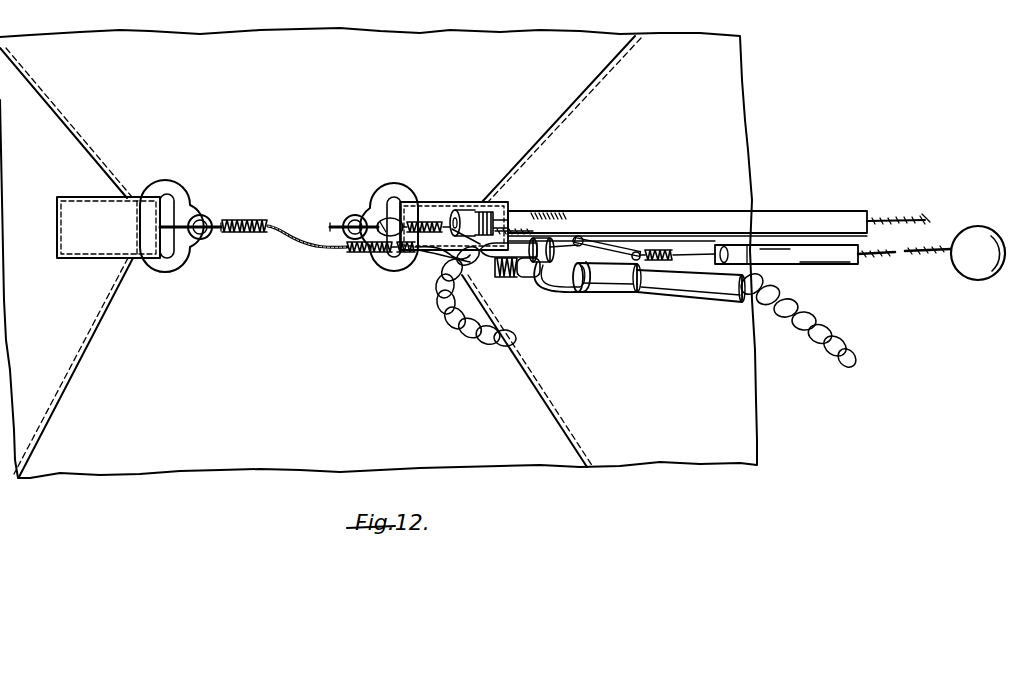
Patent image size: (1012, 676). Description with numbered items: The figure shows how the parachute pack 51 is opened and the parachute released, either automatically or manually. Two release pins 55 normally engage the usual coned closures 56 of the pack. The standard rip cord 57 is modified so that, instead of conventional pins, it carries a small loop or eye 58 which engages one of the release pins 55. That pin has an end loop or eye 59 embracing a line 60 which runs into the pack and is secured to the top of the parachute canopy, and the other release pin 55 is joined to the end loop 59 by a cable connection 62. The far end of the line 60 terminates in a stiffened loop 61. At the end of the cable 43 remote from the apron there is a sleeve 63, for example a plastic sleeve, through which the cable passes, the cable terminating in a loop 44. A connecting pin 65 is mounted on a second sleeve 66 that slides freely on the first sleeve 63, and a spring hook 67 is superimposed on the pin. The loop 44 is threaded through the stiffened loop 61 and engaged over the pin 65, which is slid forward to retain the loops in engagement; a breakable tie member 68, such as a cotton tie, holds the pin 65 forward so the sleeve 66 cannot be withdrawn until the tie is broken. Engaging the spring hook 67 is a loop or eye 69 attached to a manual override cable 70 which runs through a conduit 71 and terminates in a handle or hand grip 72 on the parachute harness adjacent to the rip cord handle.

The parachute pack 51 is at (180, 78).
The release pin 55 is at (190, 223).
The coned closure 56 is at (208, 219).
The loop or eye 58 is at (389, 208).
The cable connection 62 is at (325, 250).
The end loop or eye 59 is at (427, 253).
The line 60 is at (443, 320).
The rip cord 57 is at (878, 218).
The connecting pin 65 is at (494, 250).
The loop 44 is at (539, 245).
The breakable tie member 68 is at (561, 246).
The spring hook 67 is at (604, 240).
The loop or eye 69 is at (632, 254).
The stiffened loop 61 is at (539, 280).
The second sleeve 66 is at (591, 291).
The sleeve 63 is at (662, 291).
The cable 43 is at (815, 343).
The conduit 71 is at (828, 266).
The manual override cable 70 is at (880, 262).
The handle or hand grip 72 is at (963, 272).